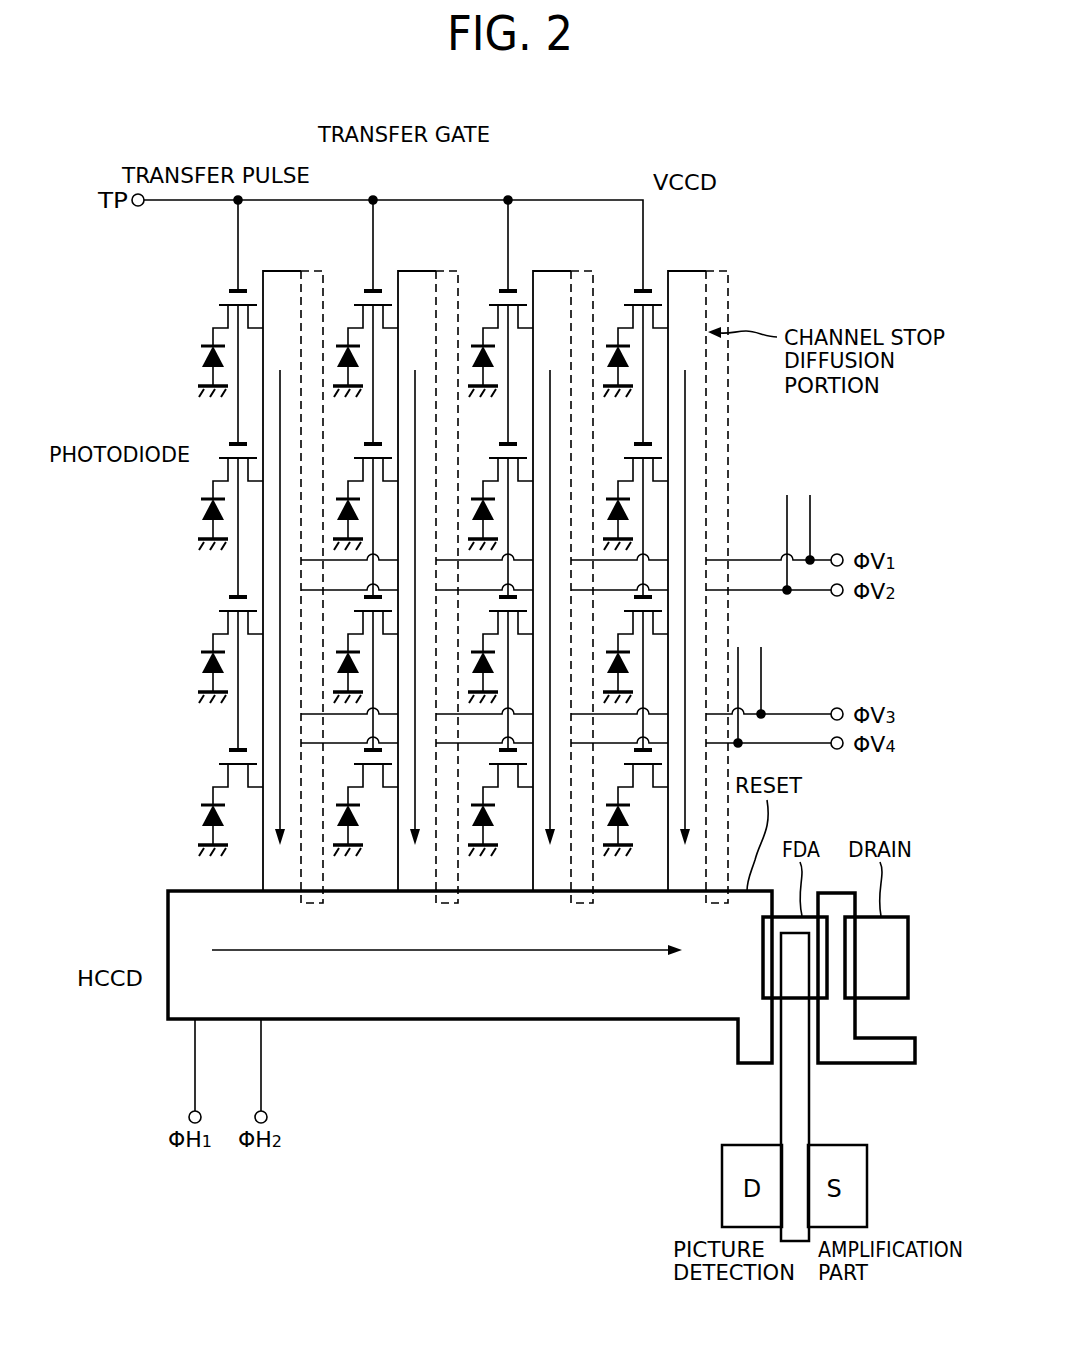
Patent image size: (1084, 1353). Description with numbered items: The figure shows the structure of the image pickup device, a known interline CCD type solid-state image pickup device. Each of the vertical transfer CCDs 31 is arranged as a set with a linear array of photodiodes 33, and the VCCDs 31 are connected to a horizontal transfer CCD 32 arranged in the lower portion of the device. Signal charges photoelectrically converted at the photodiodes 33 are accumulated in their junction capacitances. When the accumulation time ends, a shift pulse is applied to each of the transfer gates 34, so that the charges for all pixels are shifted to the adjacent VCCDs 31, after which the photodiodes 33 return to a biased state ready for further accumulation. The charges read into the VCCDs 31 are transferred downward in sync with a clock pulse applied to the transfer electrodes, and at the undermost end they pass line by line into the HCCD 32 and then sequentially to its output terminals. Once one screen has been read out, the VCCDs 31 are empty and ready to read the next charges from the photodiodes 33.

The vertical transfer CCD 31 is at (686, 270).
The horizontal transfer CCD 32 is at (168, 951).
The photodiode 33 is at (184, 382).
The transfer gate 34 is at (381, 276).